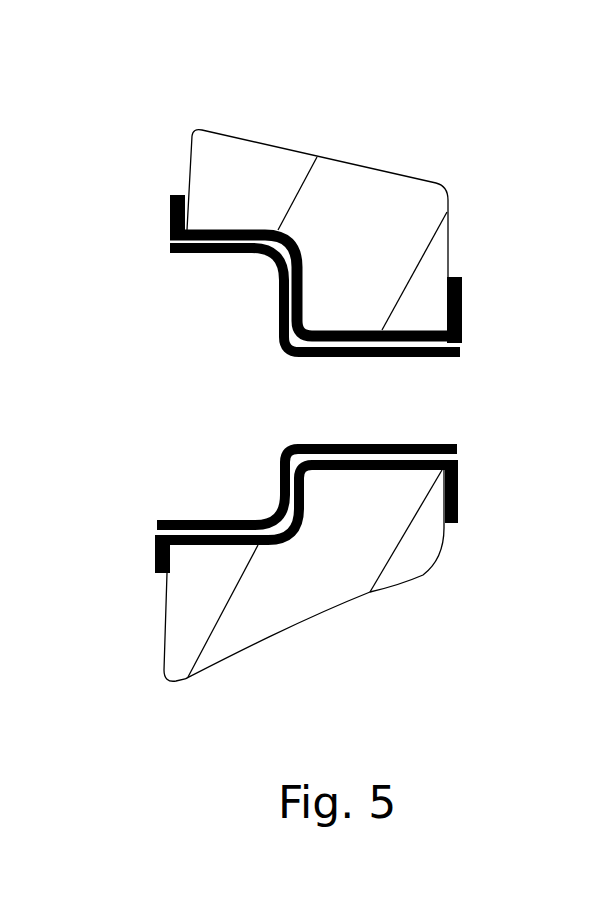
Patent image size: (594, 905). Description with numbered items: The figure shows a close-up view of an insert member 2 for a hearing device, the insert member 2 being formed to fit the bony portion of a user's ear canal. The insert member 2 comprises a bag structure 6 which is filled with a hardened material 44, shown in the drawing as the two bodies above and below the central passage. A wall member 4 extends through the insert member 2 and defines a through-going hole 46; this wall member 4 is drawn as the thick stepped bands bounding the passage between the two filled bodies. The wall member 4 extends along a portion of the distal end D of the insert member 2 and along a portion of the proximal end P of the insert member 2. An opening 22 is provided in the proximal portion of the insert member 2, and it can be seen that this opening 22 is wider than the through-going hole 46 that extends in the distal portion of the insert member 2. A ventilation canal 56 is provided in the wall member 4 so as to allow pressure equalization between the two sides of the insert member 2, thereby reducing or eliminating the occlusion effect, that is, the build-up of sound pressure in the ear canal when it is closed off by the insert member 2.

The insert member 2 is at (389, 124).
The wall member 4 is at (463, 300).
The bag structure 6 is at (425, 573).
The opening 22 is at (152, 294).
The hardened material 44 is at (270, 612).
The through-going hole 46 is at (464, 402).
The ventilation canal 56 is at (457, 344).
The distal end D is at (489, 318).
The proximal end P is at (139, 552).